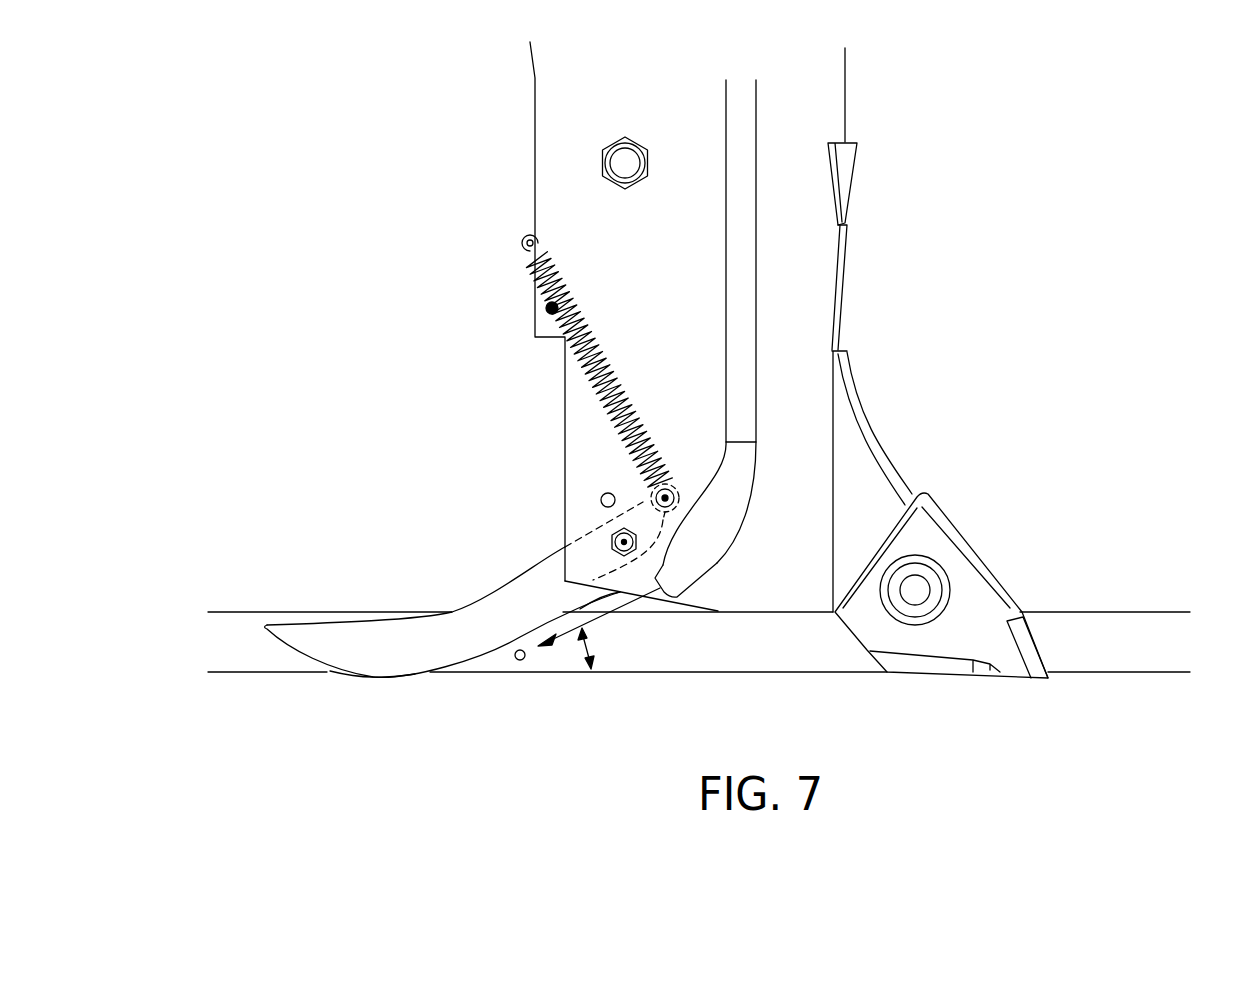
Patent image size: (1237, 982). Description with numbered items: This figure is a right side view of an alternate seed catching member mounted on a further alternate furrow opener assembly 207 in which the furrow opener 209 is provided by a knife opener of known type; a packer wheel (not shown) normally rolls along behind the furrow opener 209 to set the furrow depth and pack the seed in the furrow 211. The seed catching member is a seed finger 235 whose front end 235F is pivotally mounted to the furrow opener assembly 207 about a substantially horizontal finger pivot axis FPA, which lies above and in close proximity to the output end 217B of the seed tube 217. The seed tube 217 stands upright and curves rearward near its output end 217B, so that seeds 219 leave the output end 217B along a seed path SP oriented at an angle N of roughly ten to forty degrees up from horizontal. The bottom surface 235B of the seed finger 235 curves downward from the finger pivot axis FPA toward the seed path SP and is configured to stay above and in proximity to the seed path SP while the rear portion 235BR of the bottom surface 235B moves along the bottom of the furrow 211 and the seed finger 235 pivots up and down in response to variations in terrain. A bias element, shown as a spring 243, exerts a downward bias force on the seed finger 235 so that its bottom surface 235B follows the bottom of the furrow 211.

The furrow opener assembly 207 is at (845, 102).
The seed tube 217 is at (756, 288).
The output end of the seed tube 217B is at (687, 597).
The spring 243 is at (582, 317).
The finger pivot axis FPA is at (612, 538).
The seed finger 235 is at (508, 578).
The front end of the seed finger 235F is at (673, 513).
The bottom surface of the seed finger 235B is at (607, 593).
The rear portion of the bottom surface 235BR is at (373, 678).
The furrow 211 is at (287, 662).
The seeds 219 is at (519, 660).
The angle N is at (587, 650).
The seed path SP is at (593, 613).
The furrow opener 209 is at (1037, 645).